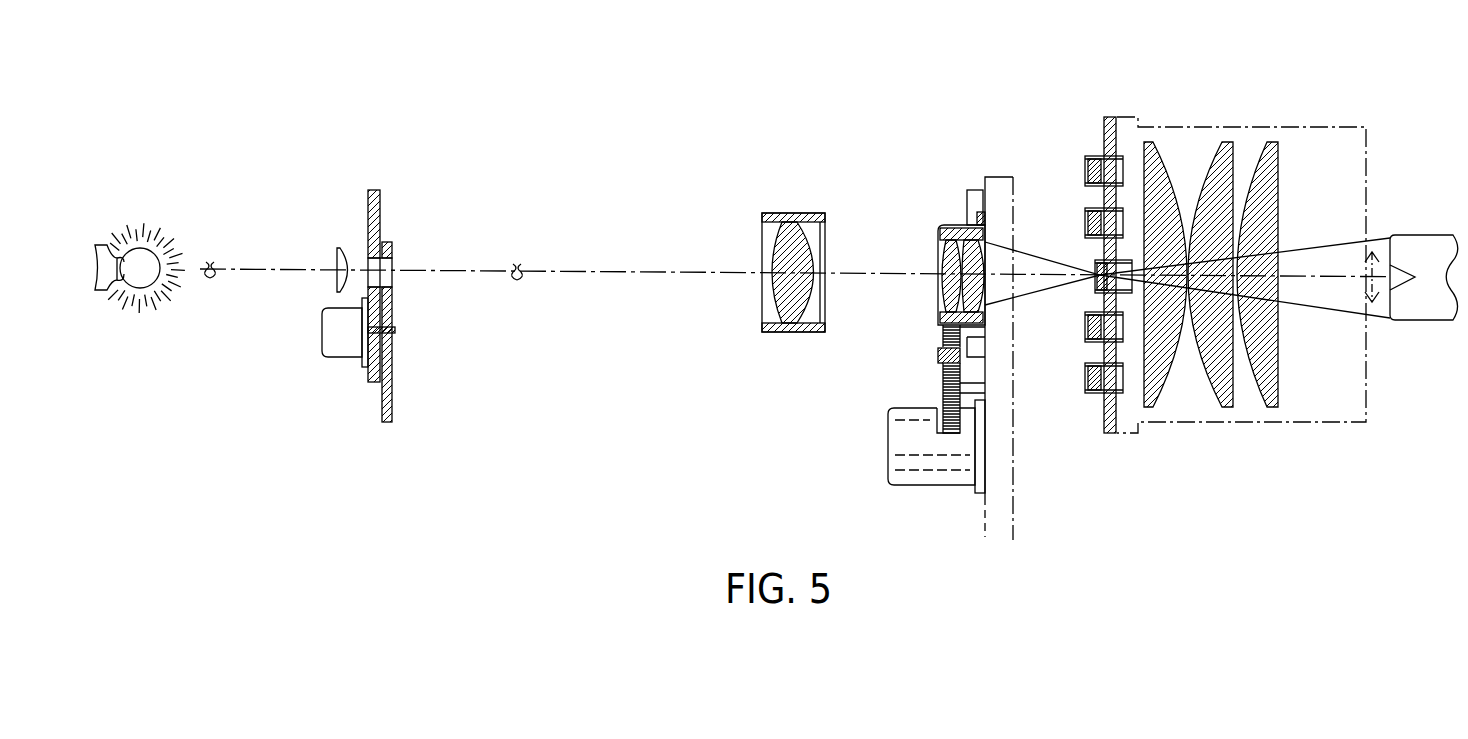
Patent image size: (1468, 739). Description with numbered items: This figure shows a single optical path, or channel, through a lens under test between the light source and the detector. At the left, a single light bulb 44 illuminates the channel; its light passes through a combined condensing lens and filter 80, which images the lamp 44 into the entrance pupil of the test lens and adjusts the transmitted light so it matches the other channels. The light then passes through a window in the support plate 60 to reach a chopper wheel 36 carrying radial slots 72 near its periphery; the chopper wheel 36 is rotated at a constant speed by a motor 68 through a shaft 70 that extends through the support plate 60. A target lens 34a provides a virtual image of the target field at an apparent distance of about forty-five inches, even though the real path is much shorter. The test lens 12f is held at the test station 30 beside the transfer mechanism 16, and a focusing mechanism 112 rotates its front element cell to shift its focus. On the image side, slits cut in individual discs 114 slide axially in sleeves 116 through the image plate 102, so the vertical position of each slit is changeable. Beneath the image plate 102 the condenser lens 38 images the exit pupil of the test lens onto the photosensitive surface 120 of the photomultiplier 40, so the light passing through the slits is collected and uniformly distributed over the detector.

The light bulb 44 is at (157, 232).
The combined condensing lens and filter 80 is at (353, 260).
The support plate 60 is at (382, 207).
The chopper wheel 36 is at (392, 388).
The radial slot 72 is at (387, 267).
The motor 68 is at (328, 338).
The shaft 70 is at (393, 325).
The target lens 34a is at (756, 210).
The test station 30 is at (930, 245).
The bracket 12f is at (950, 223).
The transfer mechanism 16 is at (995, 183).
The focusing mechanism 112 is at (888, 436).
The image plate 102 is at (1100, 117).
The sleeve 116 is at (1097, 153).
The disc 114 is at (1087, 383).
The condenser lens 38 is at (1222, 117).
The photosensitive surface 120 is at (1390, 240).
The photomultiplier 40 is at (1428, 320).